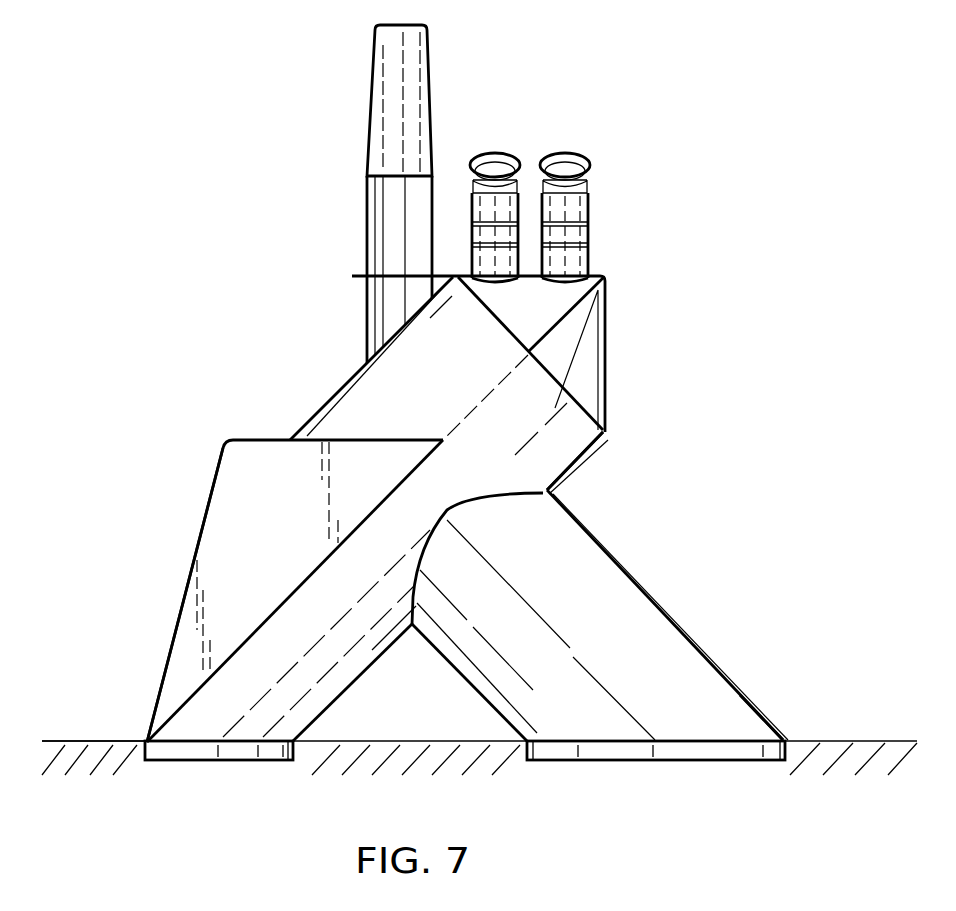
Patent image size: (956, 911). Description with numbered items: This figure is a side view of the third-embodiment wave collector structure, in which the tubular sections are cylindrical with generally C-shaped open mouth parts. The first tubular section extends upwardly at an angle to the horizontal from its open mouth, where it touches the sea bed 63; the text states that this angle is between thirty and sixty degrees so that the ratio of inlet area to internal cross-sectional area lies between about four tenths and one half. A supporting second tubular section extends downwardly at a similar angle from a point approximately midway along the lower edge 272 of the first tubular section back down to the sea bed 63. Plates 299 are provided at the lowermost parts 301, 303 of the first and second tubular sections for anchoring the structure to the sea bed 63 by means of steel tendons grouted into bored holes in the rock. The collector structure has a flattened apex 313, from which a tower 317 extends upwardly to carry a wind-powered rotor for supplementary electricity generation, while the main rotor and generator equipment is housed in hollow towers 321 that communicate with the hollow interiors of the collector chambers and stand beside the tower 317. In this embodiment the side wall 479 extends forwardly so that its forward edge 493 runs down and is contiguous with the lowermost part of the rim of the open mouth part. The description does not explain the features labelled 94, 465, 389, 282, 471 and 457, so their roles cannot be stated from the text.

The sea bed 63 is at (91, 765).
The ground surface 94 is at (145, 741).
The plates 299 is at (180, 755).
The lowermost part 301 is at (183, 742).
The tower 317 is at (375, 60).
The apex 313 is at (352, 276).
The hollow tower 321 is at (470, 158).
The upper end corner 465 is at (543, 420).
The side fin top 389 is at (261, 440).
The side wall 479 is at (247, 495).
The forward edge 493 is at (208, 503).
The curved transition 282 is at (443, 440).
The lower edge 272 is at (352, 689).
The rear leg 471 is at (630, 620).
The leg upper edge 457 is at (567, 473).
The lowermost part 303 is at (690, 737).